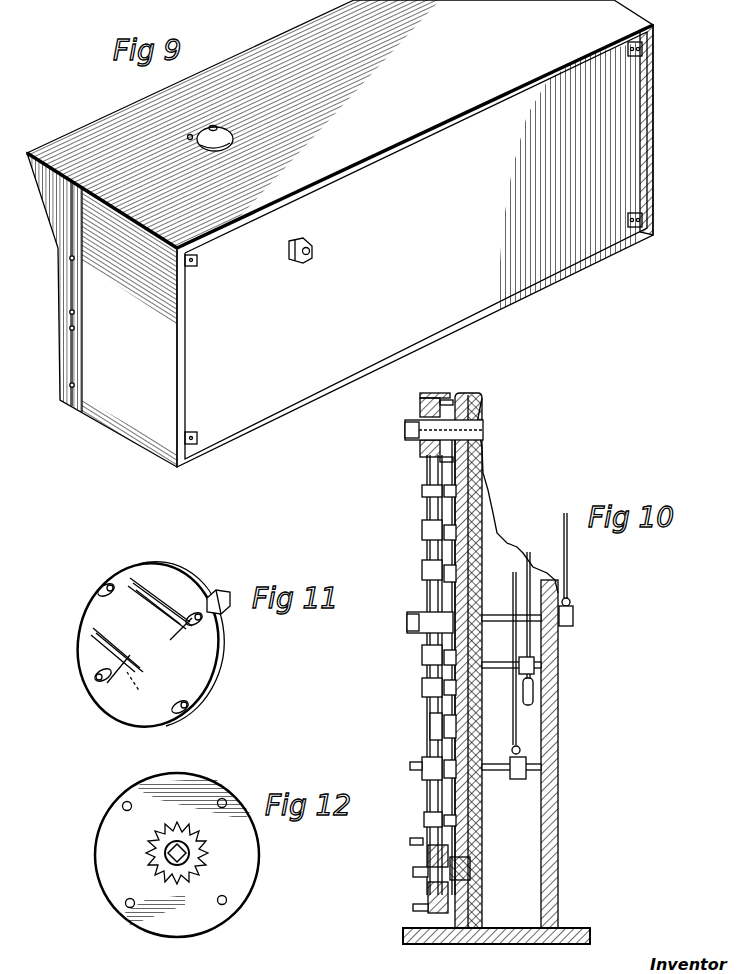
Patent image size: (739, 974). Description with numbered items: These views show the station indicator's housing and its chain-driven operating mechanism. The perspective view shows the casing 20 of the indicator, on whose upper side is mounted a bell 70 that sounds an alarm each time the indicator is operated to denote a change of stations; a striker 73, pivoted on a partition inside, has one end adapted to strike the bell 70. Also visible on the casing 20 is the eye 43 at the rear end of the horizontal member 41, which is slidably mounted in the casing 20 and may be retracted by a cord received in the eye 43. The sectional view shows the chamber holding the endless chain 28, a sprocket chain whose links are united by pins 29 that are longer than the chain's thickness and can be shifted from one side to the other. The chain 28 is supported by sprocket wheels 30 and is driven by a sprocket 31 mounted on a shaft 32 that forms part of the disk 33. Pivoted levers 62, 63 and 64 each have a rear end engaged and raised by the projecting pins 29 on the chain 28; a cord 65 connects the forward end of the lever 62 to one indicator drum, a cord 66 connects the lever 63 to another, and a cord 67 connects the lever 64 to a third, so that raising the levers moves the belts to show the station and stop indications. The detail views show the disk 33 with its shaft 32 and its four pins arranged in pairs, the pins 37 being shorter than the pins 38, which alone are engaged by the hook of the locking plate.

In FIG. 9, the casing 20 is at (340, 233).
In FIG. 9, the bell 70 is at (233, 136).
In FIG. 9, the striker 73 is at (192, 142).
In FIG. 9, the horizontal member 41 is at (290, 252).
In FIG. 9, the eye 43 is at (299, 264).
In FIG. 10, the shaft 32 is at (407, 430).
In FIG. 11, the shaft 32 is at (222, 612).
In FIG. 10, the sprocket 31 is at (420, 450).
In FIG. 10, the endless chain 28 is at (420, 482).
In FIG. 10, the pins 29 is at (410, 650).
In FIG. 10, the sprocket wheels 30 is at (428, 895).
In FIG. 10, the cord 65 is at (568, 556).
In FIG. 10, the lever 62 is at (573, 603).
In FIG. 10, the cord 66 is at (533, 647).
In FIG. 10, the lever 63 is at (537, 688).
In FIG. 10, the cord 67 is at (516, 730).
In FIG. 10, the lever 64 is at (530, 758).
In FIG. 11, the disk 33 is at (188, 600).
In FIG. 12, the disk 33 is at (177, 855).
In FIG. 11, the pins 38 is at (178, 702).
In FIG. 11, the pins 37 is at (127, 658).